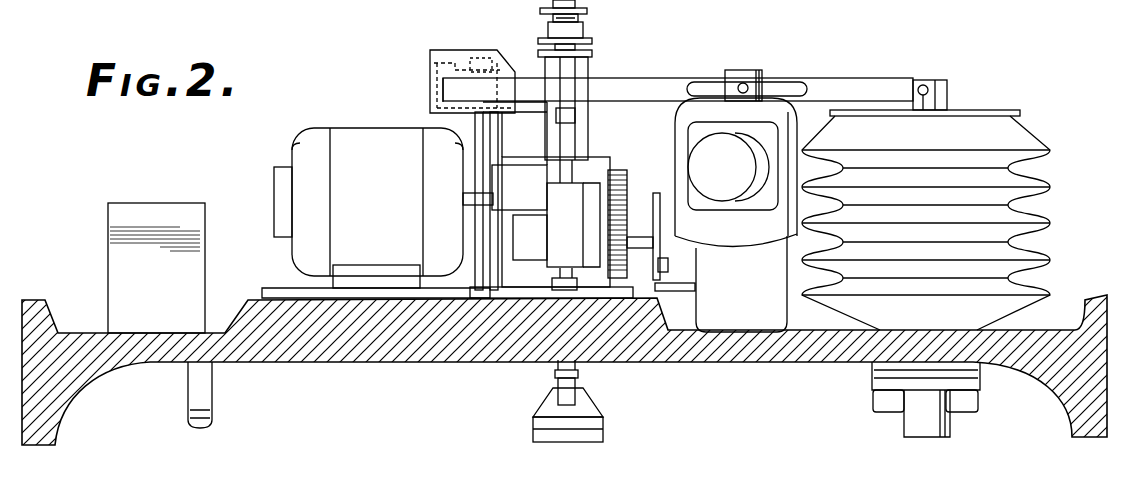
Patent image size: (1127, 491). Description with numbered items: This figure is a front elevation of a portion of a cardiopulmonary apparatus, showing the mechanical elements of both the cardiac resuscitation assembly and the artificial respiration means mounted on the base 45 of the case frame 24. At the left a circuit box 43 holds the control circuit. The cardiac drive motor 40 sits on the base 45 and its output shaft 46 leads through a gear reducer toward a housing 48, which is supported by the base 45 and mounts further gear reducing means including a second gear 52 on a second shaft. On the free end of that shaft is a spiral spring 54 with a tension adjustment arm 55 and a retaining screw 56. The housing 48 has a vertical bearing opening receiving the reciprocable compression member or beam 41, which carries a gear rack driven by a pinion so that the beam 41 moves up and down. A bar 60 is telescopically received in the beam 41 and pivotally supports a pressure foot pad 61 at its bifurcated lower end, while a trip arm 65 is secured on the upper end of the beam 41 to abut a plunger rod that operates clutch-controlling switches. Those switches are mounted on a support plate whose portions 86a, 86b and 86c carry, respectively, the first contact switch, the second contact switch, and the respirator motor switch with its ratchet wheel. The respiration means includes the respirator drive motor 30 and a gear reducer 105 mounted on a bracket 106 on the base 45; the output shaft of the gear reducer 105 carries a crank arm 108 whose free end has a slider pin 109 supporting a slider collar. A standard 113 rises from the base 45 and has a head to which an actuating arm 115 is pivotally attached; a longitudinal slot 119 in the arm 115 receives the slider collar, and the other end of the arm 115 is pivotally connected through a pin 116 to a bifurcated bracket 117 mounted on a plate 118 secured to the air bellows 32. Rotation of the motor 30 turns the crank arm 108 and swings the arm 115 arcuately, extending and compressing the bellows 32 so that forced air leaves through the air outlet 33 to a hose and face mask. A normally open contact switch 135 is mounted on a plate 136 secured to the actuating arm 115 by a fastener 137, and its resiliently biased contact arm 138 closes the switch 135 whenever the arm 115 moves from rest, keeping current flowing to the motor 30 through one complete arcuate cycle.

The case frame 24 is at (1109, 286).
The respirator drive motor 30 is at (710, 150).
The air bellows 32 is at (1000, 217).
The air outlet 33 is at (915, 423).
The drive motor 40 is at (368, 208).
The compression member or beam 41 is at (572, 78).
The circuit box 43 is at (156, 268).
The base 45 is at (258, 298).
The output shaft 46 is at (480, 199).
The housing 48 is at (585, 288).
The second gear 52 is at (620, 170).
The spiral spring 54 is at (657, 212).
The tension adjustment arm 55 is at (668, 265).
The retaining screw 56 is at (666, 273).
The bar 60 is at (558, 380).
The pressure foot pad 61 is at (580, 412).
The trip arm 65 is at (592, 52).
The portion of support plate 86a is at (573, 225).
The second portion of support plate 86b is at (535, 238).
The portion of support plate 86c is at (540, 204).
The gear reducer 105 is at (763, 130).
The bracket 106 is at (741, 284).
The crank arm 108 is at (748, 72).
The slider pin 109 is at (740, 85).
The standard 113 is at (475, 116).
The actuating arm 115 is at (865, 85).
The pin 116 is at (925, 88).
The bifurcated bracket 117 is at (935, 110).
The plate 118 is at (1010, 110).
The slot 119 is at (800, 76).
The contact switch 135 is at (448, 52).
The plate 136 is at (478, 60).
The fastener 137 is at (505, 92).
The contact arm 138 is at (430, 64).